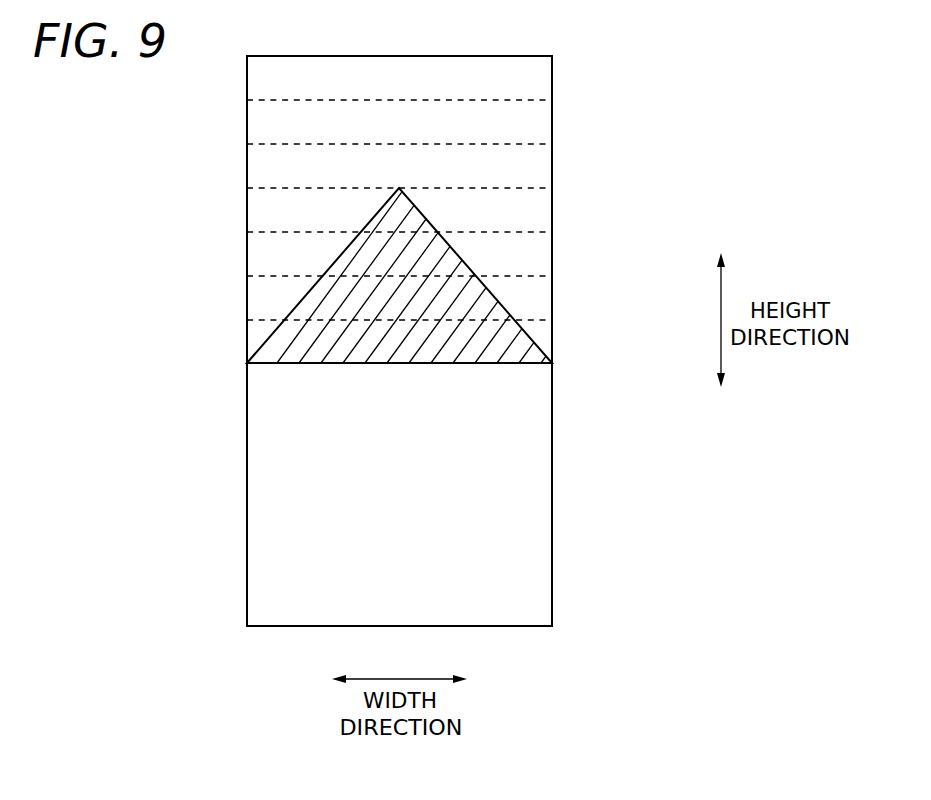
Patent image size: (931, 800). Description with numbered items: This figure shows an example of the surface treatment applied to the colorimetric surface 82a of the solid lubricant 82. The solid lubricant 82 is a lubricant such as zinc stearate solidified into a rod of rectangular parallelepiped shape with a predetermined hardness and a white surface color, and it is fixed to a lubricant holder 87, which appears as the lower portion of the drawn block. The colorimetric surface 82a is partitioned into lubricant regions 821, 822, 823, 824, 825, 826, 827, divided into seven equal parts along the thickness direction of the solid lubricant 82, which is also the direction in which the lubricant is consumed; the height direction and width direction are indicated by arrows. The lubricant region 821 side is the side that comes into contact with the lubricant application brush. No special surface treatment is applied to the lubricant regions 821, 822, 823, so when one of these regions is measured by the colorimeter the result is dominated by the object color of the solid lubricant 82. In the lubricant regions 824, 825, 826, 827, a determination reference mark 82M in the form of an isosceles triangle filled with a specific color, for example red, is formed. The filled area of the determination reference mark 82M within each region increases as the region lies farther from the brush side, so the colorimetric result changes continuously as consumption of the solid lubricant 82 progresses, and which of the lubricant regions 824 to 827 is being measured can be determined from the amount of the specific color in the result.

The solid lubricant 82 is at (650, 84).
The colorimetric surface 82a is at (246, 160).
The determination reference mark 82M is at (300, 341).
The lubricant region 821 is at (553, 74).
The lubricant region 822 is at (553, 123).
The lubricant region 823 is at (553, 170).
The lubricant region 824 is at (553, 210).
The lubricant region 825 is at (553, 254).
The lubricant region 826 is at (553, 297).
The lubricant region 827 is at (553, 342).
The lubricant holder 87 is at (553, 484).